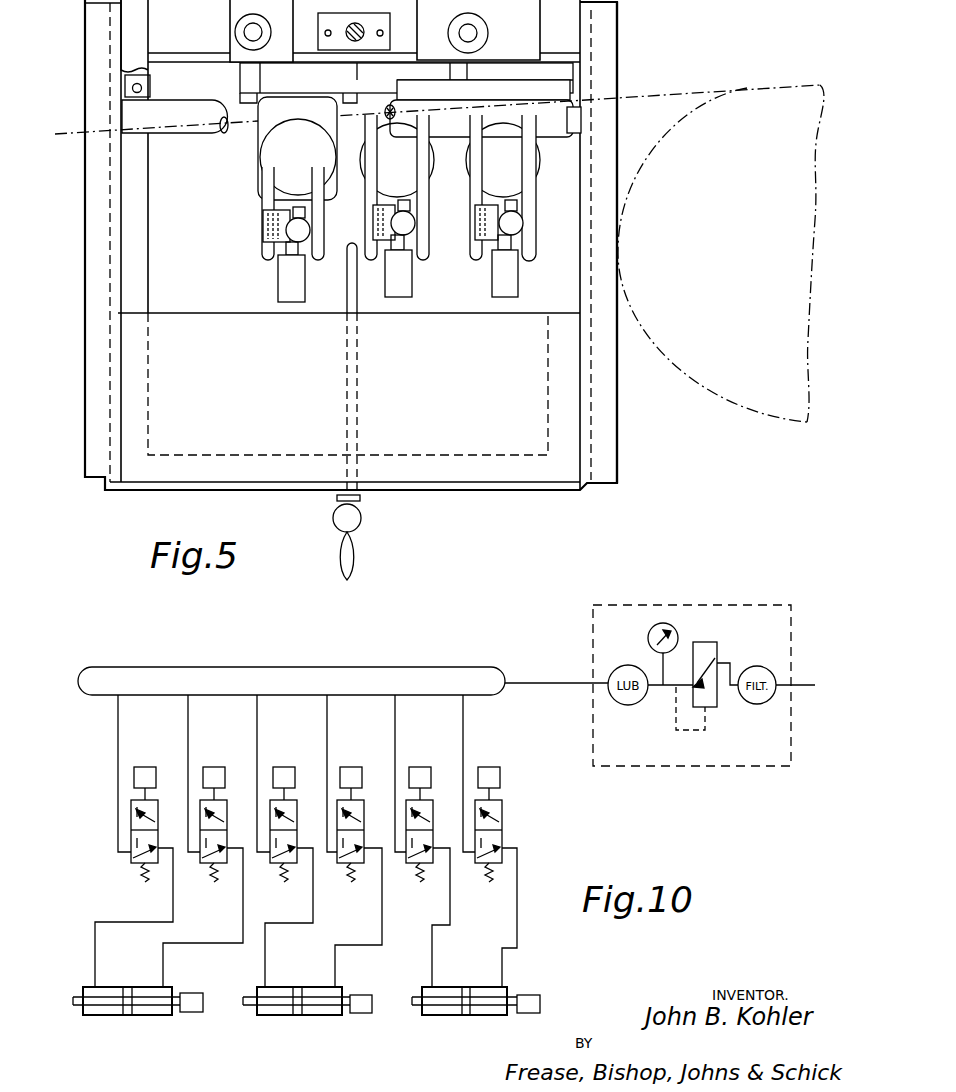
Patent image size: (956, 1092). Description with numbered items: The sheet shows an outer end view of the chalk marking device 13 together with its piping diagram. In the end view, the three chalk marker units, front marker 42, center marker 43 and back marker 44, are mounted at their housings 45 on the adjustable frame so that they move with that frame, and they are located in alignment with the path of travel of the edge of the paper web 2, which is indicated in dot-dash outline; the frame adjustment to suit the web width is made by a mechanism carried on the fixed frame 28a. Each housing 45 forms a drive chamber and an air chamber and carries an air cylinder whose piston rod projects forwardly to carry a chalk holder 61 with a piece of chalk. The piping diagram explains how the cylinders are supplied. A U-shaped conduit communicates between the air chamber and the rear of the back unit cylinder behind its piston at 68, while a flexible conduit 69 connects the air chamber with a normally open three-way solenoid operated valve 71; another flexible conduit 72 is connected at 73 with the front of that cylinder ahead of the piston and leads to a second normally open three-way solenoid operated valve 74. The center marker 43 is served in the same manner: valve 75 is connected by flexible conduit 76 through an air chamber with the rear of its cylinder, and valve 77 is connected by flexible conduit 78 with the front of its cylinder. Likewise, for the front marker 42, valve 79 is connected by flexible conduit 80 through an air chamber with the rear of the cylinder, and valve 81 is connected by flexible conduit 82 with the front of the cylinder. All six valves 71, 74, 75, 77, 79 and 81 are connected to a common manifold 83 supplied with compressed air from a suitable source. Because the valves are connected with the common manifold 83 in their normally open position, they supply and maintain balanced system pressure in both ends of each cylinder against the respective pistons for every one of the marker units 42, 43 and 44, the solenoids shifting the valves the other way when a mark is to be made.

In FIG. 5, the paper web 2 is at (690, 88).
In FIG. 5, the chalk marking device 13 is at (520, 500).
In FIG. 5, the fixed frame 28a is at (603, 427).
In FIG. 5, the front marker unit 42 is at (510, 302).
In FIG. 10, the front marker unit 42 is at (497, 1034).
In FIG. 5, the center marker unit 43 is at (400, 302).
In FIG. 10, the center marker unit 43 is at (340, 1036).
In FIG. 5, the back marker unit 44 is at (290, 307).
In FIG. 10, the back marker unit 44 is at (165, 1034).
In FIG. 5, the housing 45 is at (265, 153).
In FIG. 10, the chalk holder 61 is at (185, 995).
In FIG. 10, the cylinder rear connection 68 is at (95, 985).
In FIG. 5, the flexible conduit 69 is at (260, 195).
In FIG. 10, the flexible conduit 69 is at (110, 920).
In FIG. 10, the solenoid operated valve 71 is at (158, 805).
In FIG. 5, the flexible conduit 72 is at (320, 202).
In FIG. 10, the flexible conduit 72 is at (195, 943).
In FIG. 10, the cylinder front connection 73 is at (162, 985).
In FIG. 10, the solenoid operated valve 74 is at (227, 805).
In FIG. 10, the solenoid operated valve 75 is at (297, 805).
In FIG. 5, the flexible conduit 76 is at (377, 252).
In FIG. 10, the flexible conduit 76 is at (267, 962).
In FIG. 10, the solenoid operated valve 77 is at (364, 805).
In FIG. 5, the flexible conduit 78 is at (425, 252).
In FIG. 10, the flexible conduit 78 is at (382, 930).
In FIG. 10, the solenoid operated valve 79 is at (433, 805).
In FIG. 5, the flexible conduit 80 is at (477, 252).
In FIG. 10, the flexible conduit 80 is at (435, 960).
In FIG. 10, the solenoid operated valve 81 is at (502, 808).
In FIG. 5, the flexible conduit 82 is at (528, 252).
In FIG. 10, the flexible conduit 82 is at (519, 934).
In FIG. 5, the common manifold 83 is at (185, 130).
In FIG. 10, the common manifold 83 is at (418, 673).